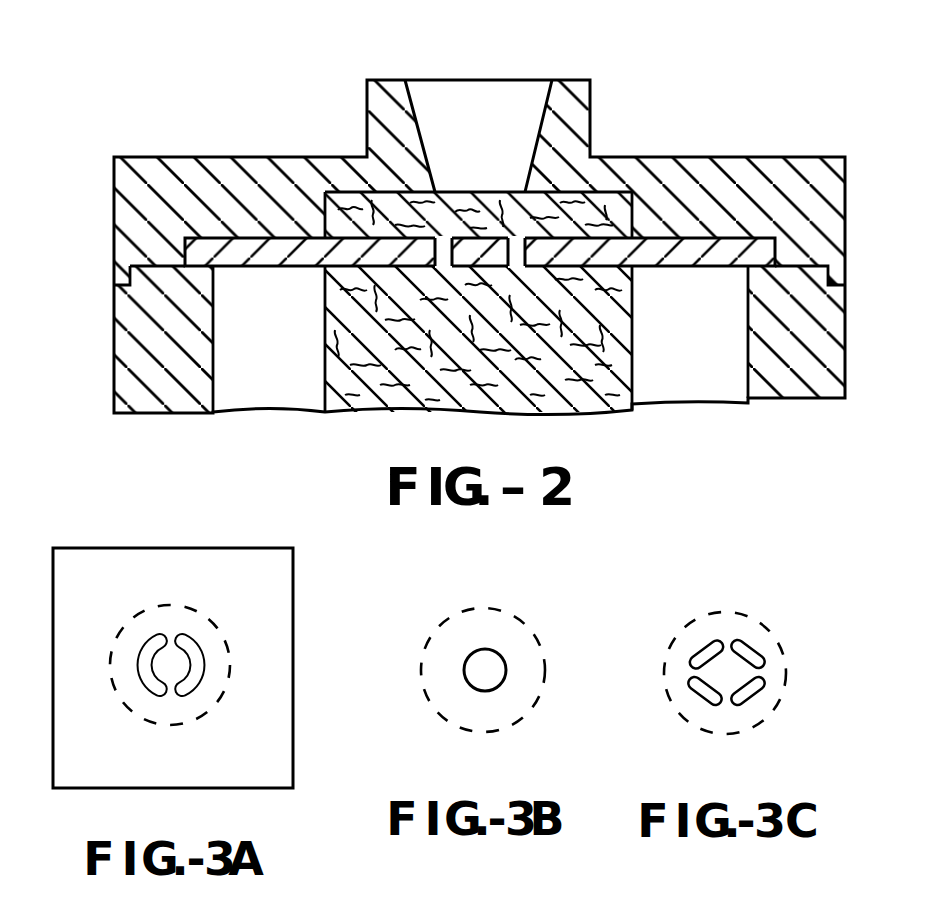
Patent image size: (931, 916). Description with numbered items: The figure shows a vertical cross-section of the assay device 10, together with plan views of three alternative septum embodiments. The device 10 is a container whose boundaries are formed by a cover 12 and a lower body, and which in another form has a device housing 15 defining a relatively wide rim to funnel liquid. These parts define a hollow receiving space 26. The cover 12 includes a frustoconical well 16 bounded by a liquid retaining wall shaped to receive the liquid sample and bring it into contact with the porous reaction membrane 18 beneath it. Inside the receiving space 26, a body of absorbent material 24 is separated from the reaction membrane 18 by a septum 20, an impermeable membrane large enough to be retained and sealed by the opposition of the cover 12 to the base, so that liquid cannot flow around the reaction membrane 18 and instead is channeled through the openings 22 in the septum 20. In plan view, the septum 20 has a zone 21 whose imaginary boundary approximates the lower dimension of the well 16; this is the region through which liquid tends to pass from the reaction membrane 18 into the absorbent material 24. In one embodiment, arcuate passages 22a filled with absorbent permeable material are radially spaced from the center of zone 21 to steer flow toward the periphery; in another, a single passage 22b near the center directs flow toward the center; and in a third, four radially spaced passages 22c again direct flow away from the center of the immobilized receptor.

In FIG. 2, the device 10 is at (216, 91).
In FIG. 2, the cover 12 is at (114, 209).
In FIG. 2, the device housing 15 is at (114, 344).
In FIG. 2, the well 16 is at (535, 88).
In FIG. 2, the porous reaction membrane 18 is at (497, 192).
In FIG. 2, the septum 20 is at (722, 238).
In FIG. 3A, the septum 20 is at (207, 547).
In FIG. 3A, the zone 21 is at (212, 630).
In FIG. 3B, the zone 21 is at (488, 611).
In FIG. 3C, the zone 21 is at (752, 620).
In FIG. 2, the openings 22 is at (441, 266).
In FIG. 3A, the passages 22a is at (150, 648).
In FIG. 3B, the passage 22b is at (482, 672).
In FIG. 3C, the passages 22c is at (705, 648).
In FIG. 2, the absorbent material 24 is at (532, 400).
In FIG. 2, the receiving space 26 is at (272, 388).